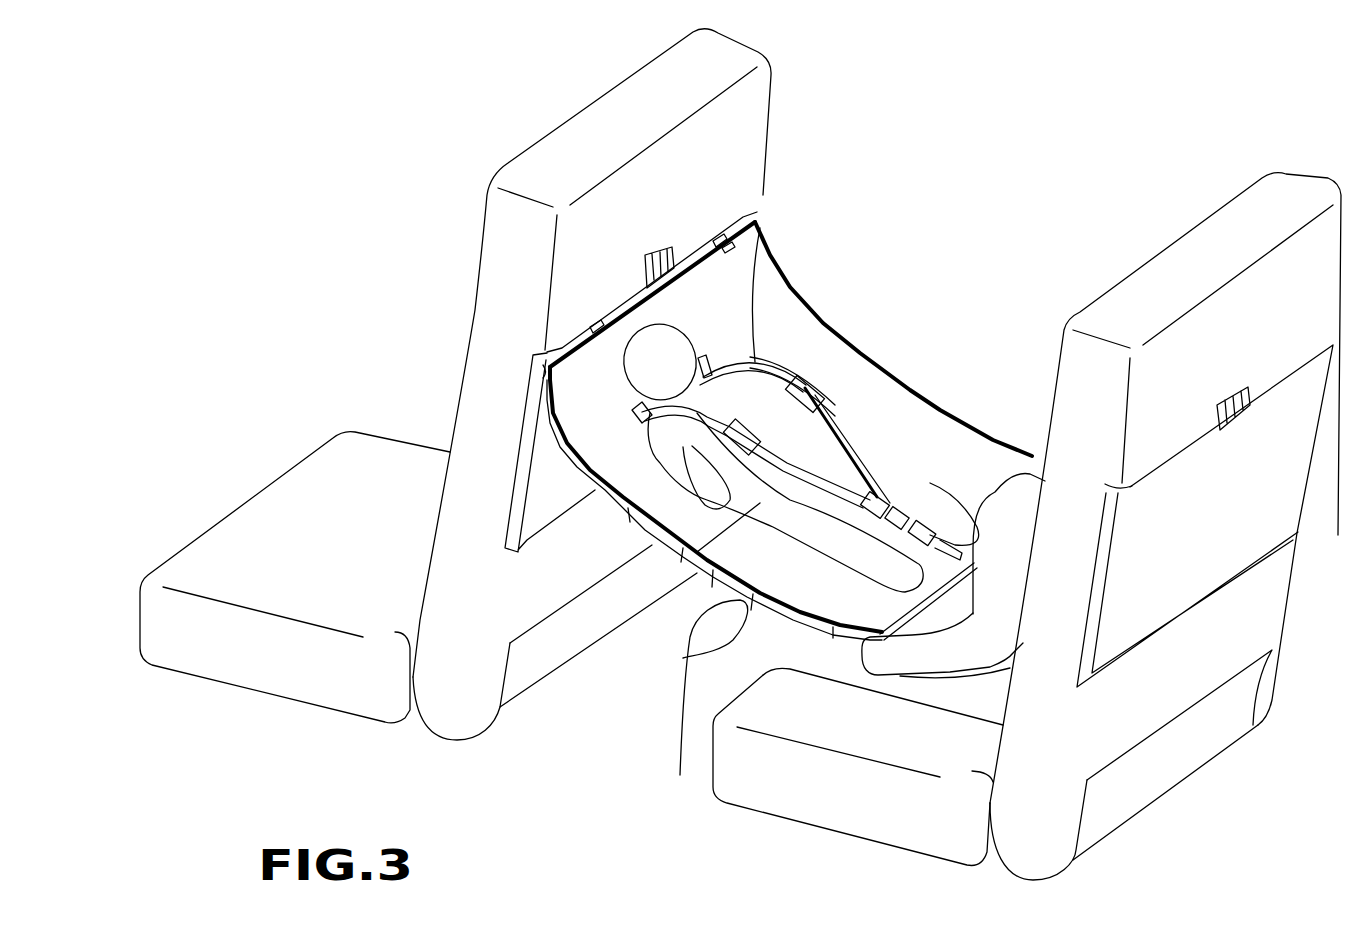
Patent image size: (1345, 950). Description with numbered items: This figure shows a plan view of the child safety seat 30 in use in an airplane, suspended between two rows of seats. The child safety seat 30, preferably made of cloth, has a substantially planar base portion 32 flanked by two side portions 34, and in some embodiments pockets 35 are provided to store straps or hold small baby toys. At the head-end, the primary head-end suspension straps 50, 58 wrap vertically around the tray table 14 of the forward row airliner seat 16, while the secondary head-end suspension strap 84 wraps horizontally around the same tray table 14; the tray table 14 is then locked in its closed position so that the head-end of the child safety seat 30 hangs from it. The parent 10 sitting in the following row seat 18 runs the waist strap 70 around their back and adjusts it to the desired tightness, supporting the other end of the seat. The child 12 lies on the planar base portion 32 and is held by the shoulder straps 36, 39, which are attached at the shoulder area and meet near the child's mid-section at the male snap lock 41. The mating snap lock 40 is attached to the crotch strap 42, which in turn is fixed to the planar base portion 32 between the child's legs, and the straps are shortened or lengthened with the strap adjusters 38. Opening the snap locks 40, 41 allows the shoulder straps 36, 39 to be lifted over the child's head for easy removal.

The parent 10 is at (1010, 540).
The child 12 is at (663, 441).
The tray table 14 is at (543, 468).
The forward row airliner seat 16 is at (580, 176).
The following row seat 18 is at (1153, 320).
The child safety seat 30 is at (948, 318).
The planar base portion 32 is at (602, 397).
The side portions 34 is at (690, 653).
The pockets 35 is at (663, 552).
The shoulder strap 36 is at (758, 363).
The strap adjusters 38 is at (820, 387).
The shoulder strap 39 is at (877, 467).
The mating snap lock 40 is at (913, 492).
The snap lock 41 is at (900, 483).
The crotch strap 42 is at (945, 505).
The primary head-end suspension strap 50 is at (754, 248).
The primary head-end suspension strap 58 is at (577, 490).
The waist strap 70 is at (963, 680).
The secondary head-end suspension strap 84 is at (545, 373).